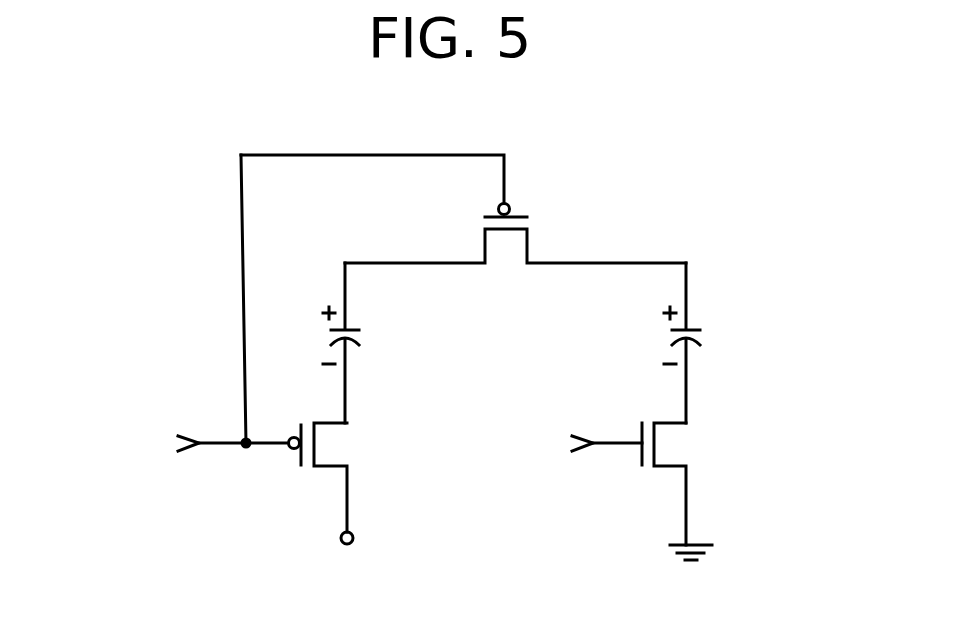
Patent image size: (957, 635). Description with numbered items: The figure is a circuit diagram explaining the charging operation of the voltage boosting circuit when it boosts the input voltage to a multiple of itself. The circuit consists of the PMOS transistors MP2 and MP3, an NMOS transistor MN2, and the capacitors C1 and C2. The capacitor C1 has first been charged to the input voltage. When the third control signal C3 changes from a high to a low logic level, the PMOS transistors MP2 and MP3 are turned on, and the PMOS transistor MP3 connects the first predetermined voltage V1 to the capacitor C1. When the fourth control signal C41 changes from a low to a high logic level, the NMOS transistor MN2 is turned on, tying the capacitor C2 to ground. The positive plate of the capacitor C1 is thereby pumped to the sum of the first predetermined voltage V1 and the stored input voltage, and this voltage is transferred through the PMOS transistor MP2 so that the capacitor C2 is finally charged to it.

The PMOS transistor MP2 is at (515, 253).
The PMOS transistor MP3 is at (348, 477).
The NMOS transistor MN2 is at (698, 491).
The capacitor C1 is at (363, 343).
The capacitor C2 is at (703, 343).
The third control signal C3 is at (210, 444).
The fourth control signal C41 is at (576, 444).
The first predetermined voltage V1 is at (350, 558).